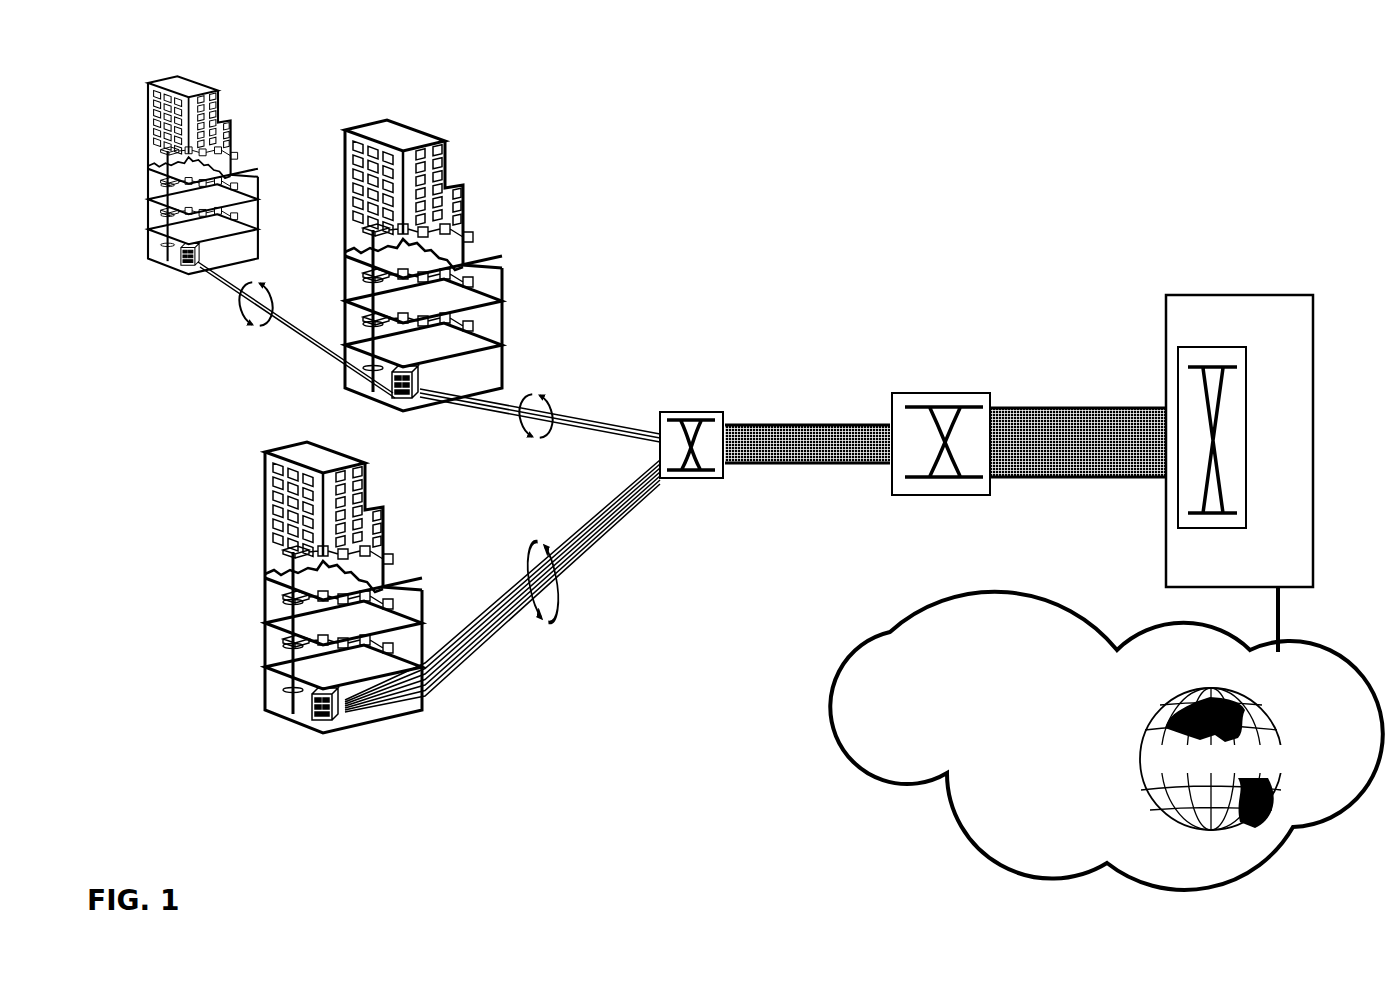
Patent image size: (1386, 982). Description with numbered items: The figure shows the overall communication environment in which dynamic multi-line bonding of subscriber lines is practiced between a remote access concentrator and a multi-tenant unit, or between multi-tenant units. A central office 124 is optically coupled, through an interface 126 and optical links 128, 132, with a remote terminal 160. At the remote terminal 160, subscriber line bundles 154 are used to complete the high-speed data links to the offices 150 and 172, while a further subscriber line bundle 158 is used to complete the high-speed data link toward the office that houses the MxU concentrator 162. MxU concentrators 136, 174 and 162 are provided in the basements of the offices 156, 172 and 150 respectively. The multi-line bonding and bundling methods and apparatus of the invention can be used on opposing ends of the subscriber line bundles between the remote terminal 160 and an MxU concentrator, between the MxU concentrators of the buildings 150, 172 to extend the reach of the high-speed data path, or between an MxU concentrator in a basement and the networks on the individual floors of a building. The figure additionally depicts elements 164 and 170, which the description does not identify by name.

The central office 124 is at (1262, 302).
The interface 126 is at (1178, 370).
The optical link 128 is at (1030, 407).
The optical link 132 is at (820, 425).
The MxU concentrator 136 is at (388, 397).
The office 150 is at (398, 130).
The subscriber line bundles 154 is at (568, 417).
The office 156 is at (297, 460).
The subscriber line bundle 158 is at (580, 538).
The remote terminal 160 is at (697, 480).
The MxU concentrator 162 is at (318, 735).
The Internet 164 is at (890, 640).
The connection from building 172 to building 150 170 is at (281, 328).
The office 172 is at (198, 87).
The MxU concentrator 174 is at (158, 270).